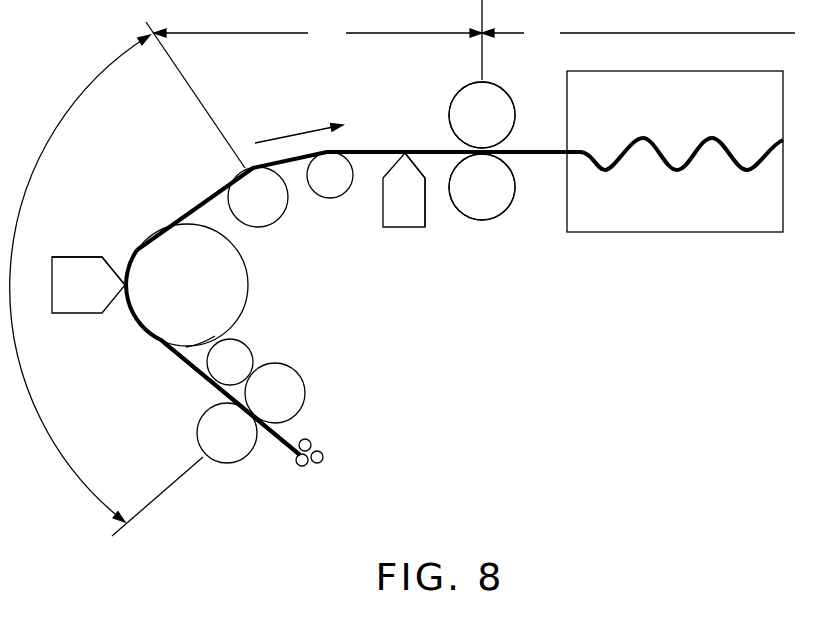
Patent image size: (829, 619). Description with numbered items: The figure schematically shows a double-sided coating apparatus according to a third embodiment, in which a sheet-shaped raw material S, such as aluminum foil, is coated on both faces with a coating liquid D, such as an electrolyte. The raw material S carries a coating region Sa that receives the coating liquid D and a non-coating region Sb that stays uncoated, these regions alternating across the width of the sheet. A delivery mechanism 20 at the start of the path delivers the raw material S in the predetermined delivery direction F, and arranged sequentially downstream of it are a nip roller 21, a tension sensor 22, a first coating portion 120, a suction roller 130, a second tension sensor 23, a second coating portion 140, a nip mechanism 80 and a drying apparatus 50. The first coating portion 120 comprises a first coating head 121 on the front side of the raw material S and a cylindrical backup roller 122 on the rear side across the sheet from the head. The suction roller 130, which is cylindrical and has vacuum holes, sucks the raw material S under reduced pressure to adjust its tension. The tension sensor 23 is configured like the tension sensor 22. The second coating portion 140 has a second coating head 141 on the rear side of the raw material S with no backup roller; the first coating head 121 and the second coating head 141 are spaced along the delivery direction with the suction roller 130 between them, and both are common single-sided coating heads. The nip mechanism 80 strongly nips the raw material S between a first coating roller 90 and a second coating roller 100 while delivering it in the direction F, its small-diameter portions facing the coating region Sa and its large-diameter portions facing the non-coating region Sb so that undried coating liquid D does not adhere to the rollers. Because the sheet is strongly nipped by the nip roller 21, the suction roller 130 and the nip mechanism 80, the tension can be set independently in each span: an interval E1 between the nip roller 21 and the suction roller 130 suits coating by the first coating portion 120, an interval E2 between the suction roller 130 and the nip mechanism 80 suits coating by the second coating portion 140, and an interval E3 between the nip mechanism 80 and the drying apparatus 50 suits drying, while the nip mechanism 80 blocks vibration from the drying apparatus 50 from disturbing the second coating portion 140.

The delivery mechanism 20 is at (319, 449).
The nip roller 21 is at (304, 392).
The tension sensor 22 is at (240, 358).
The tension sensor 23 is at (333, 198).
The drying apparatus 50 is at (675, 233).
The nip mechanism 80 is at (489, 221).
The first coating roller 90 is at (515, 113).
The second coating roller 100 is at (511, 208).
The first coating portion 120 is at (82, 313).
The first coating head 121 is at (82, 267).
The backup roller 122 is at (247, 290).
The suction roller 130 is at (276, 221).
The second coating portion 140 is at (405, 228).
The second coating head 141 is at (421, 214).
The coating liquid D is at (137, 247).
The raw material S is at (174, 352).
The coating region Sa is at (189, 365).
The non-coating region Sb is at (215, 336).
The interval E1 is at (127, 279).
The interval E2 is at (318, 33).
The interval E3 is at (638, 40).
The delivery direction F is at (299, 125).